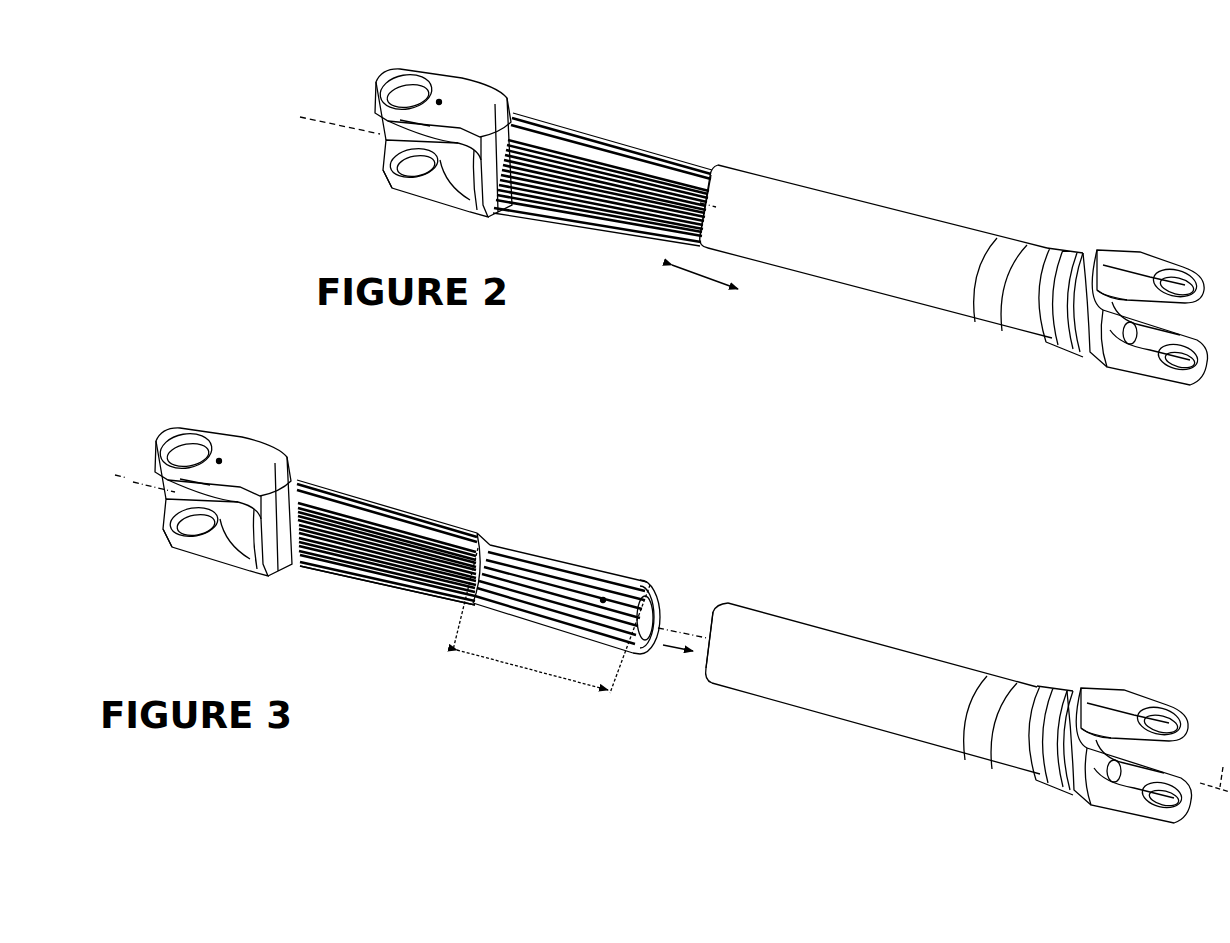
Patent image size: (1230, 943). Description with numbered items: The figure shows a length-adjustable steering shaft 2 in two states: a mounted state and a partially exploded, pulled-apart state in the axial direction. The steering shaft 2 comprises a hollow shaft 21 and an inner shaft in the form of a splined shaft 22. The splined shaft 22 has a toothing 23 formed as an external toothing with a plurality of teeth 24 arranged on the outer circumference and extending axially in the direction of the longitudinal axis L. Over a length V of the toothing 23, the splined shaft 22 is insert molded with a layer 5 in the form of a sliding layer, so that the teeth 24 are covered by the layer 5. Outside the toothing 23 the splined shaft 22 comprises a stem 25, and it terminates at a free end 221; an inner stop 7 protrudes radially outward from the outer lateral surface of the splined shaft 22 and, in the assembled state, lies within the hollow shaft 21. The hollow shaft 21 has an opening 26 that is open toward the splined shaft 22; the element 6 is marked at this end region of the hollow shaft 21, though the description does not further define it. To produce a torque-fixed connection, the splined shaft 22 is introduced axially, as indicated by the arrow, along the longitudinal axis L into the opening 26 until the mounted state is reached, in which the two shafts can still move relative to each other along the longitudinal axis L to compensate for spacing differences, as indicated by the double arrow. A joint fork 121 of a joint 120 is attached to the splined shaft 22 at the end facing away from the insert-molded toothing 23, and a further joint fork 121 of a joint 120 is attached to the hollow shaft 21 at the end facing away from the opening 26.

In FIG. 2, the length-adjustable steering shaft 2 is at (897, 100).
In FIG. 3, the layer 5 is at (630, 580).
In FIG. 2, the open end of tube 6 is at (713, 185).
In FIG. 3, the open end of tube 6 is at (714, 611).
In FIG. 3, the inner stop 7 is at (417, 597).
In FIG. 2, the hollow shaft 21 is at (893, 247).
In FIG. 3, the hollow shaft 21 is at (927, 617).
In FIG. 2, the splined shaft 22 is at (576, 150).
In FIG. 3, the splined shaft 22 is at (445, 490).
In FIG. 3, the toothing 23 is at (517, 547).
In FIG. 3, the teeth 24 is at (373, 480).
In FIG. 3, the stem 25 is at (320, 503).
In FIG. 2, the opening 26 is at (703, 160).
In FIG. 3, the opening 26 is at (698, 622).
In FIG. 3, the joint 120 is at (240, 460).
In FIG. 2, the joint fork 121 is at (463, 105).
In FIG. 3, the joint fork 121 is at (1130, 707).
In FIG. 3, the free end 221 is at (647, 650).
In FIG. 3, the longitudinal axis L is at (118, 475).
In FIG. 3, the length V is at (523, 673).